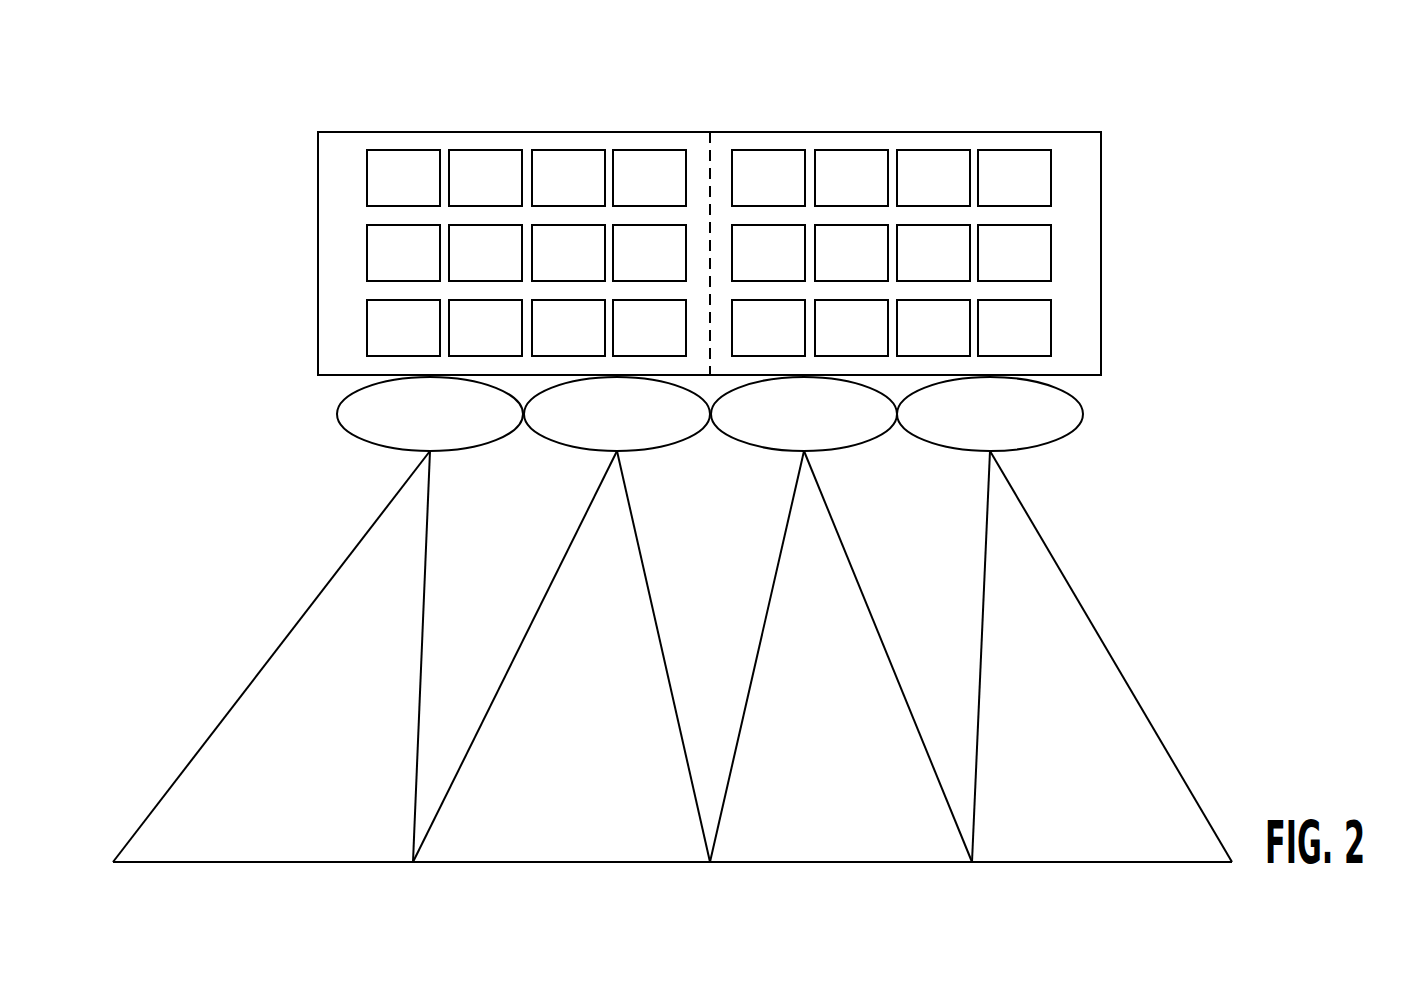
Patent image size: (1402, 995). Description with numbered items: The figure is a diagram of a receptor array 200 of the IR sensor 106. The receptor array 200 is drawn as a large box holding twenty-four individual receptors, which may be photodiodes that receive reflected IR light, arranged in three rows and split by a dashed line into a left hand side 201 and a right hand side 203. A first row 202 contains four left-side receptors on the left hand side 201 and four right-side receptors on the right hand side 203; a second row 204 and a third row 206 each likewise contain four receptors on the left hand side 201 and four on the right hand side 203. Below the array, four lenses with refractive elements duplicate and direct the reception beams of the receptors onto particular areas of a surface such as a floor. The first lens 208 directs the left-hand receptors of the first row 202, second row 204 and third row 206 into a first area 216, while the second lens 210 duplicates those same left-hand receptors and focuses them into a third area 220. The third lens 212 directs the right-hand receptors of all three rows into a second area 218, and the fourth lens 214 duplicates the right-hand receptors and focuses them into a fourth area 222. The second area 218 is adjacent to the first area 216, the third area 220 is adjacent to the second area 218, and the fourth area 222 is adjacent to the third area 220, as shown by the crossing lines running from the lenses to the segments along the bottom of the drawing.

The IR sensor 106 is at (153, 114).
The receptor array 200 is at (353, 145).
The left hand side 201 is at (610, 140).
The right hand side 203 is at (892, 142).
The first row 202 is at (297, 297).
The second row 204 is at (297, 221).
The third row 206 is at (297, 145).
The first lens 208 is at (412, 429).
The second lens 210 is at (599, 429).
The third lens 212 is at (786, 429).
The fourth lens 214 is at (972, 429).
The first area 216 is at (247, 854).
The second area 218 is at (559, 854).
The third area 220 is at (824, 854).
The fourth area 222 is at (1084, 854).